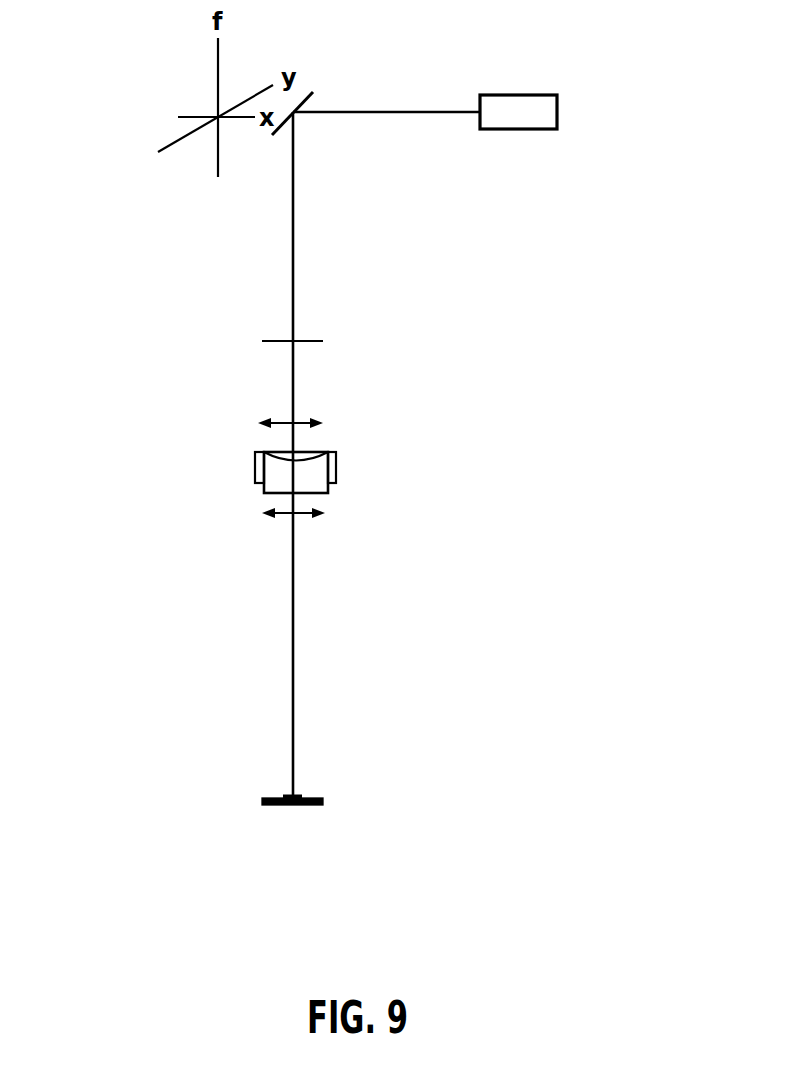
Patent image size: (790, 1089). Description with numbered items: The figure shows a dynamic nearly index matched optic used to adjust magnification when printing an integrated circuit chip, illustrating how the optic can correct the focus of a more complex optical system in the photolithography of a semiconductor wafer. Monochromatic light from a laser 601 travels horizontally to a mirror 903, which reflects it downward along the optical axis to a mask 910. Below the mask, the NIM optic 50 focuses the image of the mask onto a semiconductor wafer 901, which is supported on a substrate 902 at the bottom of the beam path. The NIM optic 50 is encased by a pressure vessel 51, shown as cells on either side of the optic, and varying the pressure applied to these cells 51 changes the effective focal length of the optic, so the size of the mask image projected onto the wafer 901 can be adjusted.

The mirror 903 is at (313, 92).
The laser 601 is at (557, 95).
The mask 910 is at (323, 341).
The NIM optic 50 is at (258, 488).
The pressure vessel 51 is at (253, 462).
The semiconductor wafer 901 is at (302, 795).
The substrate 902 is at (323, 805).